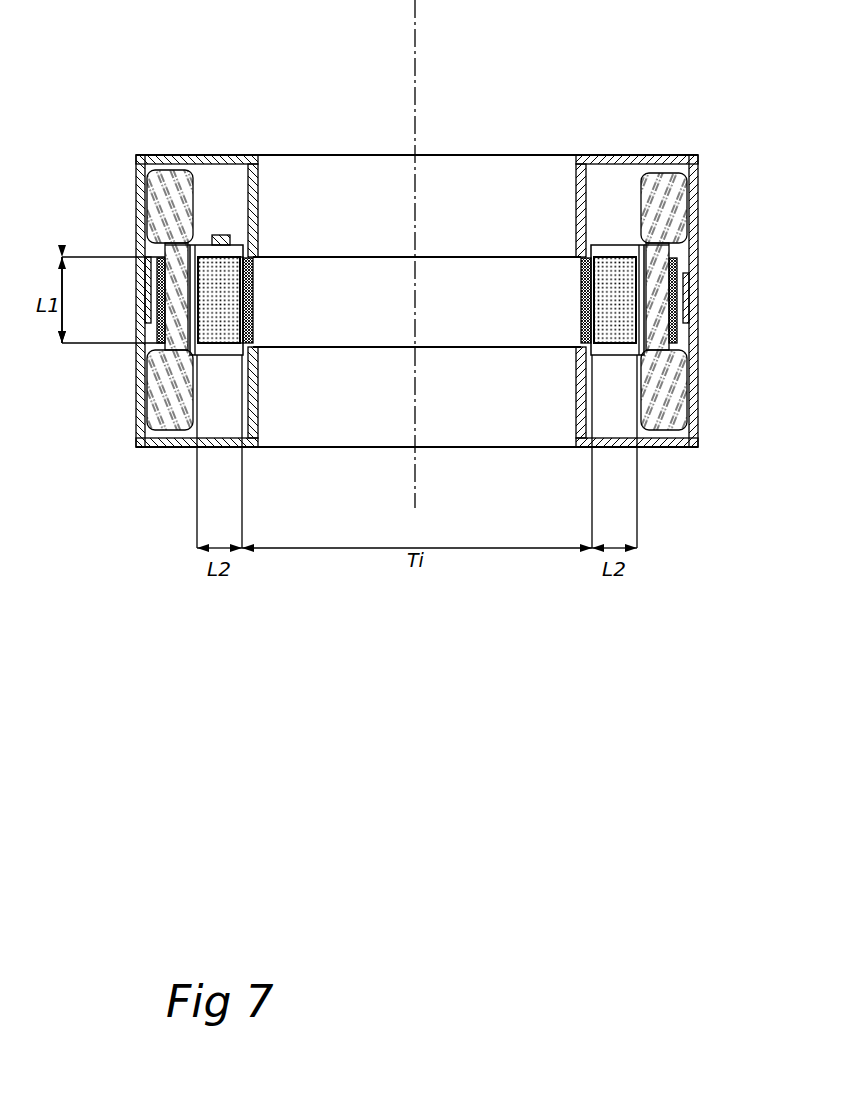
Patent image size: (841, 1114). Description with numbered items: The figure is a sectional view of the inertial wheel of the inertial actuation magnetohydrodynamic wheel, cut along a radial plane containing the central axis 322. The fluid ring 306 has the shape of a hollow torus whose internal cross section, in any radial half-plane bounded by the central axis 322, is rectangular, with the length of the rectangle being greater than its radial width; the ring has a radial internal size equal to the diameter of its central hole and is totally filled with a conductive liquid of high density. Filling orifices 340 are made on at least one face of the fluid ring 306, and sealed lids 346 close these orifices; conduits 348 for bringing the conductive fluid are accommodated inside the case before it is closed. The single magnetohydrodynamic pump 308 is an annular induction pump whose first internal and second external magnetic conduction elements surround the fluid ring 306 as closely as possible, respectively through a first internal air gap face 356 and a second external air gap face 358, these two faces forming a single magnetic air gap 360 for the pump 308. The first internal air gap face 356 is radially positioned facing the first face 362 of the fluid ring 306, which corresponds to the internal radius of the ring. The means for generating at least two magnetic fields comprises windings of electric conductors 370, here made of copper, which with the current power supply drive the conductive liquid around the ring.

The central axis 322 is at (415, 10).
The magnetohydrodynamic pump 308 is at (476, 481).
The conduits for bringing the conductive fluid 348 is at (225, 197).
The windings of electric conductors 370 is at (173, 185).
The filling orifices 340 is at (162, 257).
The first internal air gap face 356 is at (258, 274).
The second external air gap face 358 is at (205, 323).
The sealed lids 346 is at (210, 234).
The magnetic air gap 360 is at (225, 328).
The first face of the fluid ring 362 is at (252, 325).
The fluid ring 306 is at (603, 283).